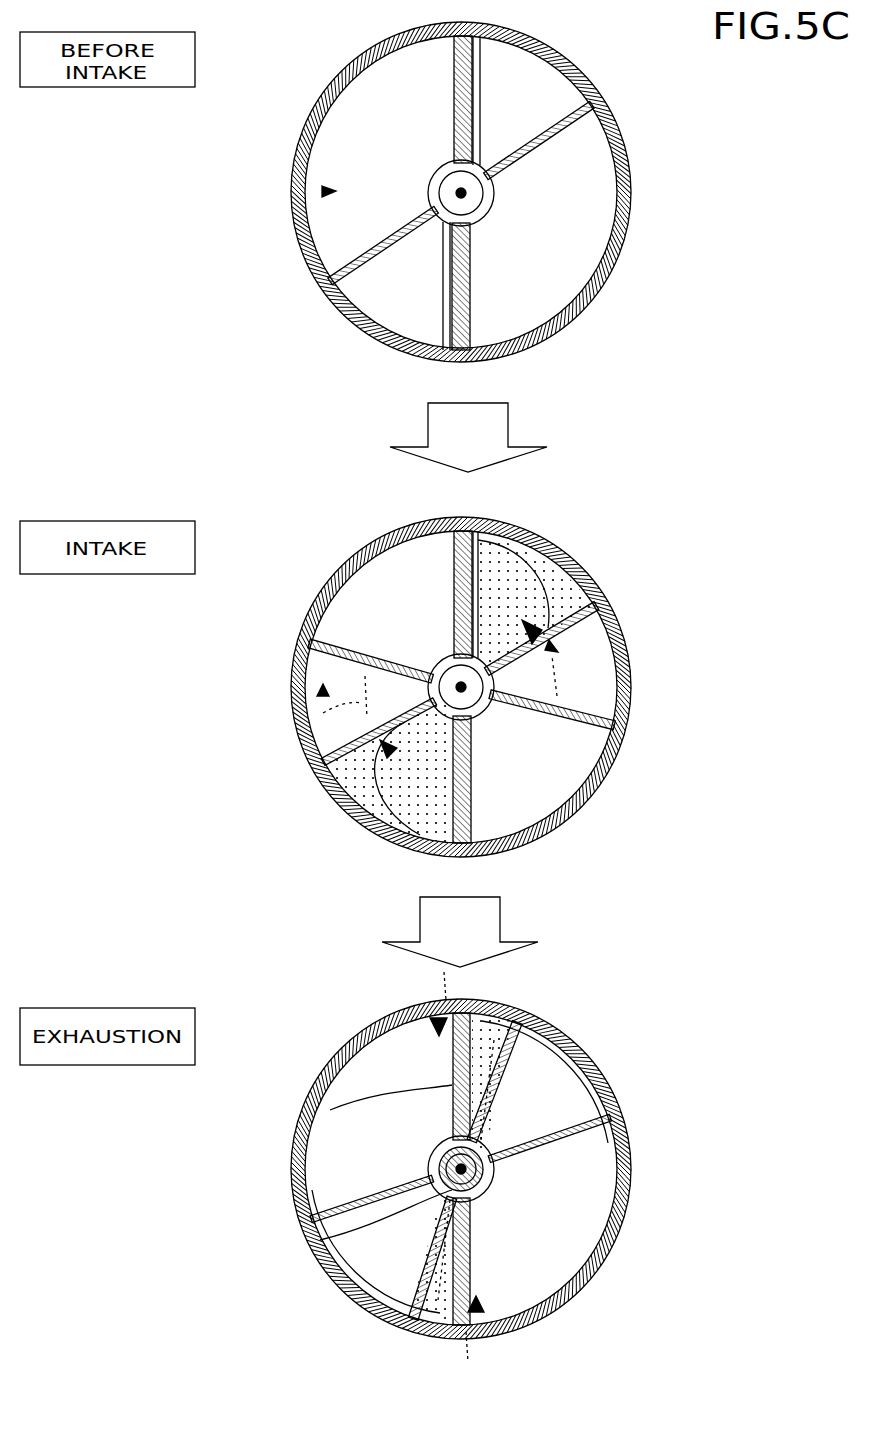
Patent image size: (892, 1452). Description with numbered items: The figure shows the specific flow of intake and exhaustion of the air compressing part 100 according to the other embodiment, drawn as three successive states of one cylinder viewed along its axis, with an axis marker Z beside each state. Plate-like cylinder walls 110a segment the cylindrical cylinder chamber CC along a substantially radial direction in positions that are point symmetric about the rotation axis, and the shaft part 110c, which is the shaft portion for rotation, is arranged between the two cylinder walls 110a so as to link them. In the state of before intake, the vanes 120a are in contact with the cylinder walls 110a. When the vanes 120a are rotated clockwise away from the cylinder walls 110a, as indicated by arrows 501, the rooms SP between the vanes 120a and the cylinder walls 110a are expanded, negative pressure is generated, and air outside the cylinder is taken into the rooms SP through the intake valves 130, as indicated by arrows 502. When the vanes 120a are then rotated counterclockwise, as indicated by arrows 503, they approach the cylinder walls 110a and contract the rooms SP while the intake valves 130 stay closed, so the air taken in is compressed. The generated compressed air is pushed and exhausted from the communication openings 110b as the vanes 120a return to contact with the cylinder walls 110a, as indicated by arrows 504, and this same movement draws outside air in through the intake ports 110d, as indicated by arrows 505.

The air compressing part 100 is at (285, 80).
The cylinder walls 110a is at (470, 100).
The communication openings 110b is at (450, 630).
The shaft part 110c is at (496, 1192).
The intake ports 110d is at (455, 992).
The vanes 120a is at (604, 104).
The intake valves 130 is at (480, 103).
The cylinder chamber CC is at (300, 210).
The rooms SP is at (478, 540).
The arrows 501 is at (528, 535).
The arrows 502 is at (558, 680).
The arrows 503 is at (570, 1060).
The arrows 504 is at (453, 1078).
The arrows 505 is at (440, 992).
The Z axis Z is at (770, 844).